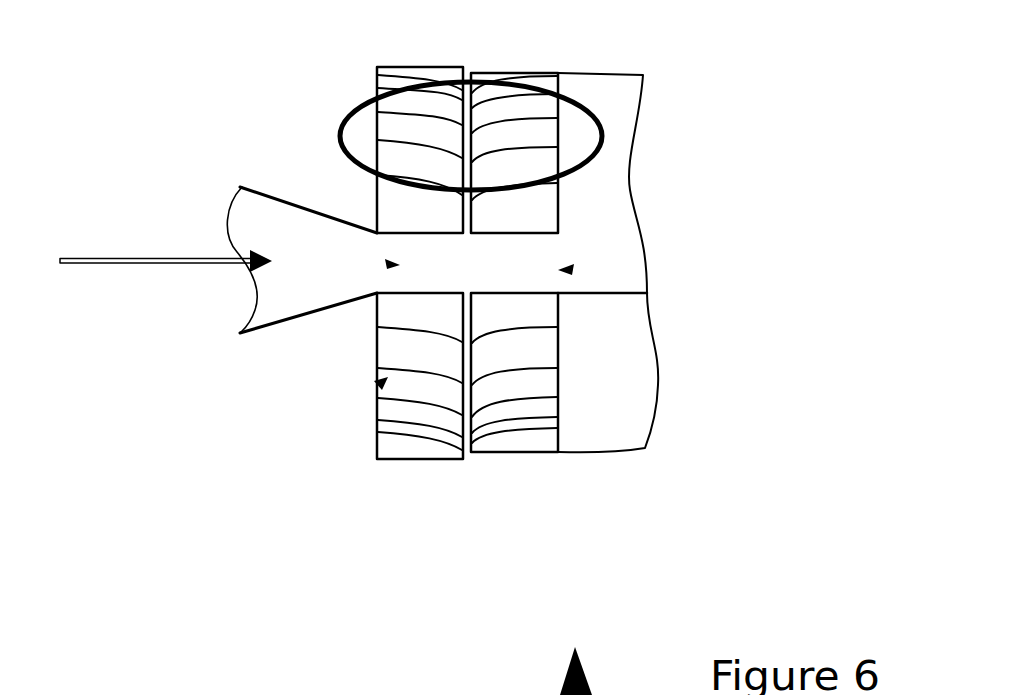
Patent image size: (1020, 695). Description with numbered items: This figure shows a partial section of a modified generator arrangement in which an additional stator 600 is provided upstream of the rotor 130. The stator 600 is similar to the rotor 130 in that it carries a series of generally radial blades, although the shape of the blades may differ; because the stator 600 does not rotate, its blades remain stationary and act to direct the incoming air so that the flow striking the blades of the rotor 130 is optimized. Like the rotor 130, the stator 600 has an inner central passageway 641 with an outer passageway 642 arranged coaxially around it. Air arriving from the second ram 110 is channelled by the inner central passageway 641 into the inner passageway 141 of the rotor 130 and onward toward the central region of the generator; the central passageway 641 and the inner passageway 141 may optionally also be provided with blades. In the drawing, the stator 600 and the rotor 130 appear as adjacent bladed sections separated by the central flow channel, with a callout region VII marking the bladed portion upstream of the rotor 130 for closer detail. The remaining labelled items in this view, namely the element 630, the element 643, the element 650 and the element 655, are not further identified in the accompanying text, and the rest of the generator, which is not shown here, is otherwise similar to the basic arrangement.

The second ram 110 is at (288, 313).
The rotor 130 is at (617, 468).
The inner passageway 141 is at (572, 269).
The stator 600 is at (365, 346).
The second lamellar block 630 is at (502, 466).
The inner central passageway 641 is at (388, 264).
The outer passageway 642 is at (380, 384).
The lamellae layers 643 is at (402, 232).
The support 650 is at (216, 684).
The support element 655 is at (325, 694).
The detail region VII is at (363, 100).